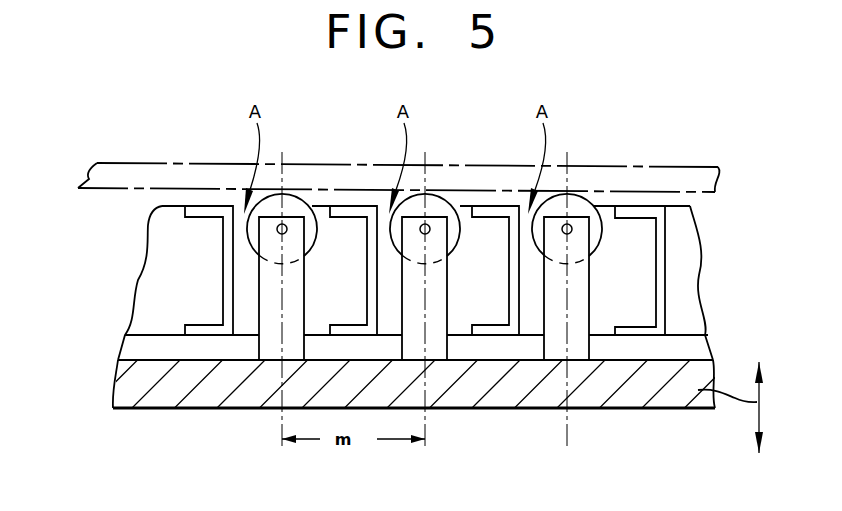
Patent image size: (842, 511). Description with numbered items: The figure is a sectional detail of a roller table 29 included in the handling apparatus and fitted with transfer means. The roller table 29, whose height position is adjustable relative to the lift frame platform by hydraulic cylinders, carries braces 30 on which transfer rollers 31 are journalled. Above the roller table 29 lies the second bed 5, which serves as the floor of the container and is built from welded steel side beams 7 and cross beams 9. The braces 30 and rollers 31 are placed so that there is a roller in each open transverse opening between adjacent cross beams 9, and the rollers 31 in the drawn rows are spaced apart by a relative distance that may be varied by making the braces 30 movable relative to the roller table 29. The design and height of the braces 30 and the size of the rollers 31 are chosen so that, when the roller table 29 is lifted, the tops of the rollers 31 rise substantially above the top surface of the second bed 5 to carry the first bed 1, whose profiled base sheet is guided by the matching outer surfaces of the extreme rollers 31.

The first bed 1 is at (200, 173).
The second bed 5 is at (124, 288).
The side beam 7 is at (693, 308).
The cross beam 9 is at (222, 292).
The roller table 29 is at (200, 396).
The brace 30 is at (298, 302).
The roller 31 is at (307, 212).